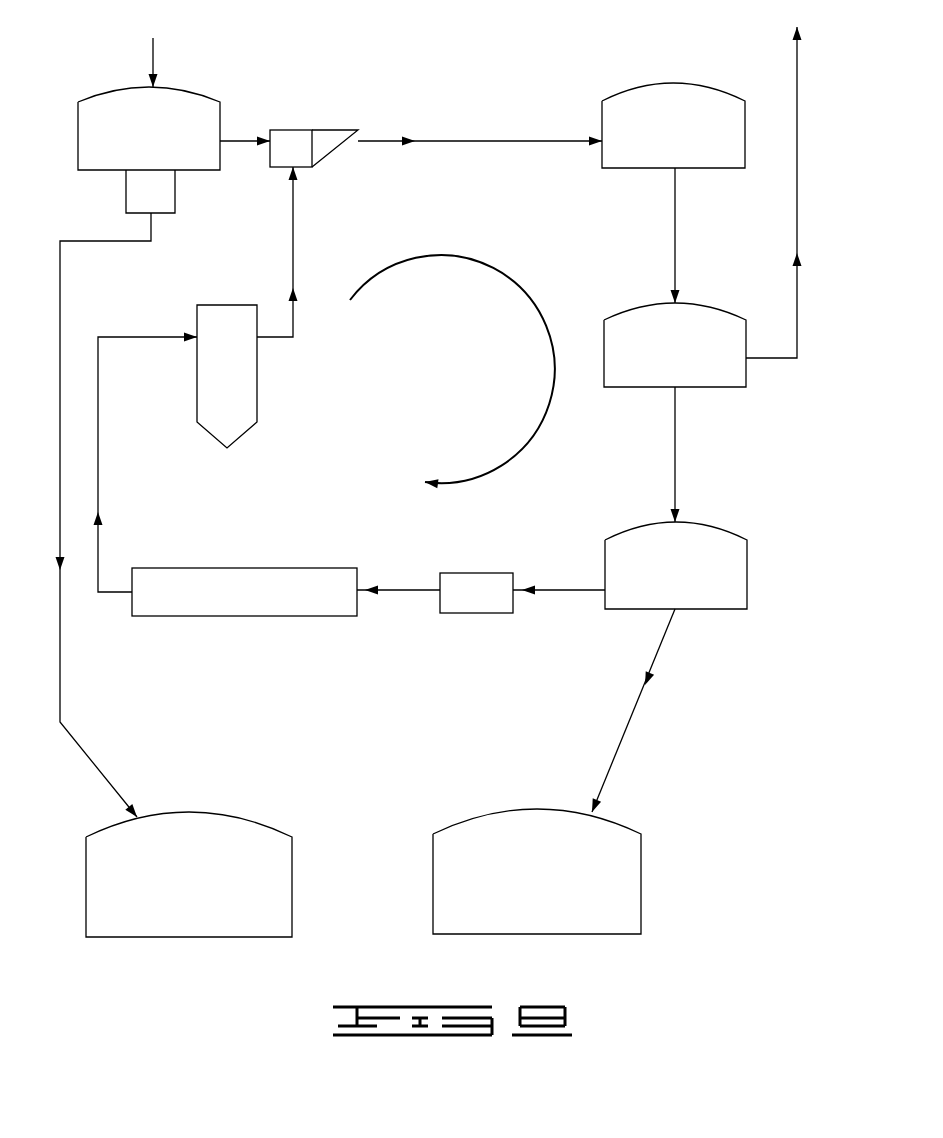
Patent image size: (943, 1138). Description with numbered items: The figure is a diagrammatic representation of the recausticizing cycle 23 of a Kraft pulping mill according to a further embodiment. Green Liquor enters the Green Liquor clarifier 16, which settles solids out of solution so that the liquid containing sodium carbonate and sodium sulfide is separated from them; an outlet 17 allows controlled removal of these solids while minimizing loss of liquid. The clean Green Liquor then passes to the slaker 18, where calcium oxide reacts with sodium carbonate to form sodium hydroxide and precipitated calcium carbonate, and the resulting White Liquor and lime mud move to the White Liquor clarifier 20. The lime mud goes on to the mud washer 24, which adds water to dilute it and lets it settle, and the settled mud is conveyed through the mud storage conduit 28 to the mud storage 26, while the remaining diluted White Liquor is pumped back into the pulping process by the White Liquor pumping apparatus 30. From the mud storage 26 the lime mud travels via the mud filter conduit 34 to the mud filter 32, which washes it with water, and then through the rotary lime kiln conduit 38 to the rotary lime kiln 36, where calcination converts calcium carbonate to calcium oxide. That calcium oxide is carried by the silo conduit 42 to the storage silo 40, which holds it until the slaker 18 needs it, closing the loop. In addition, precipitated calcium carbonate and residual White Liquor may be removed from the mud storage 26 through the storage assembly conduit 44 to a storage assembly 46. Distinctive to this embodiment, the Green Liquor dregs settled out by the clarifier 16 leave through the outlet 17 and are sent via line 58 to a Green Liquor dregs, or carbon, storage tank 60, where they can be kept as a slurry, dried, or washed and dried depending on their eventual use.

The Green Liquor clarifier 16 is at (122, 92).
The outlet 17 is at (175, 190).
The slaker 18 is at (287, 136).
The White Liquor clarifier 20 is at (670, 87).
The recausticizing cycle 23 is at (505, 280).
The mud washer 24 is at (708, 389).
The mud storage 26 is at (742, 557).
The mud storage conduit 28 is at (675, 480).
The White Liquor pumping apparatus 30 is at (797, 190).
The mud filter 32 is at (490, 608).
The mud filter conduit 34 is at (572, 588).
The rotary lime kiln 36 is at (254, 577).
The rotary lime kiln conduit 38 is at (410, 588).
The storage silo 40 is at (247, 380).
The silo conduit 42 is at (98, 452).
The storage assembly conduit 44 is at (628, 728).
The storage assembly 46 is at (625, 873).
The line 58 is at (60, 676).
The Green Liquor dregs storage tank 60 is at (287, 857).